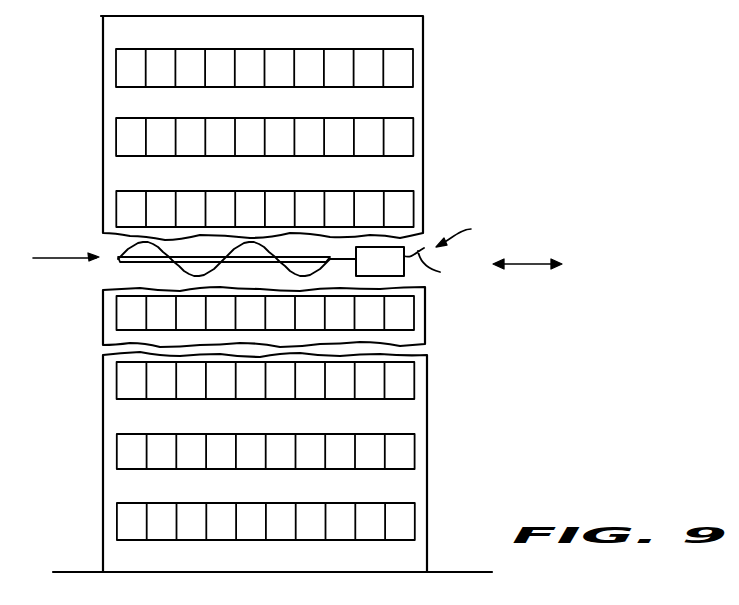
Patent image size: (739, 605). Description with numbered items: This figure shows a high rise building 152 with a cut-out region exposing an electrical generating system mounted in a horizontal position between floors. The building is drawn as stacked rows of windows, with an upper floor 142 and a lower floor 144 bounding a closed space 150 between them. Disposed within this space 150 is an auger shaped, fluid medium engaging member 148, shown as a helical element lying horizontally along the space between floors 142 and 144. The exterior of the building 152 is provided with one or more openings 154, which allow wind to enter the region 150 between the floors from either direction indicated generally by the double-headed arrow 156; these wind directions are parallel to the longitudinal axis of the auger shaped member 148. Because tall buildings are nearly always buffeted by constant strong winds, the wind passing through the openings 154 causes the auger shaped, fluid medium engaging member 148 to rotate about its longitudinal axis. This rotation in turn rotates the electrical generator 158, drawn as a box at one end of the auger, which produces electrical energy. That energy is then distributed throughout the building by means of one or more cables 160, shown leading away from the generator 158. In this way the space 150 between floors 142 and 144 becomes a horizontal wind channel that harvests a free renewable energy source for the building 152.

The floor 142 is at (111, 210).
The floor 144 is at (109, 316).
The auger shaped fluid medium engaging member 148 is at (117, 248).
The space between floors 150 is at (118, 270).
The building 152 is at (101, 154).
The opening 154 is at (51, 261).
The arrow 156 is at (531, 262).
The electrical generator 158 is at (396, 274).
The cable 160 is at (436, 266).